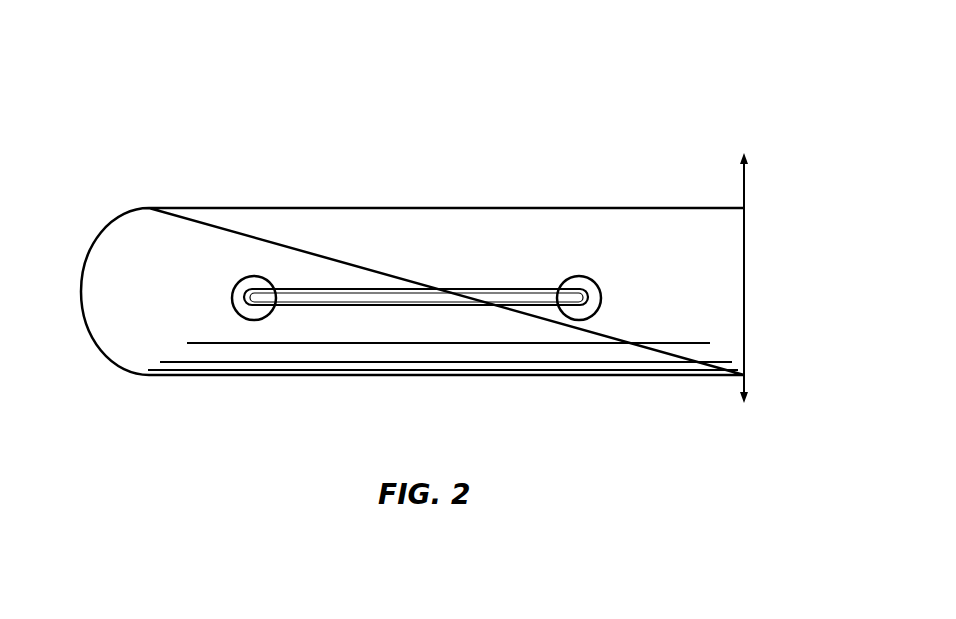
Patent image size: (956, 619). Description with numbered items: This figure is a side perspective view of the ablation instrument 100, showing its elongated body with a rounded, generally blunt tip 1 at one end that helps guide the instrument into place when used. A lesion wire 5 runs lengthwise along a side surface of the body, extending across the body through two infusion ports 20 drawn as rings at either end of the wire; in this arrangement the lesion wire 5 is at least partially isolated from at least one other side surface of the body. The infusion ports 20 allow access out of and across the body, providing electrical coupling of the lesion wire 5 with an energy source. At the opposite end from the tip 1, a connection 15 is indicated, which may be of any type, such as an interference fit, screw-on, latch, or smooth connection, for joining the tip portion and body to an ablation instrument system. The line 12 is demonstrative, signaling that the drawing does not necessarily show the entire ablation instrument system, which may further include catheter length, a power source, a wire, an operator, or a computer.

The ablation instrument 100 is at (500, 88).
The tip 1 is at (80, 280).
The lesion wire 5 is at (385, 287).
The line 12 is at (744, 375).
The connection 15 is at (762, 268).
The infusion ports 20 is at (555, 318).